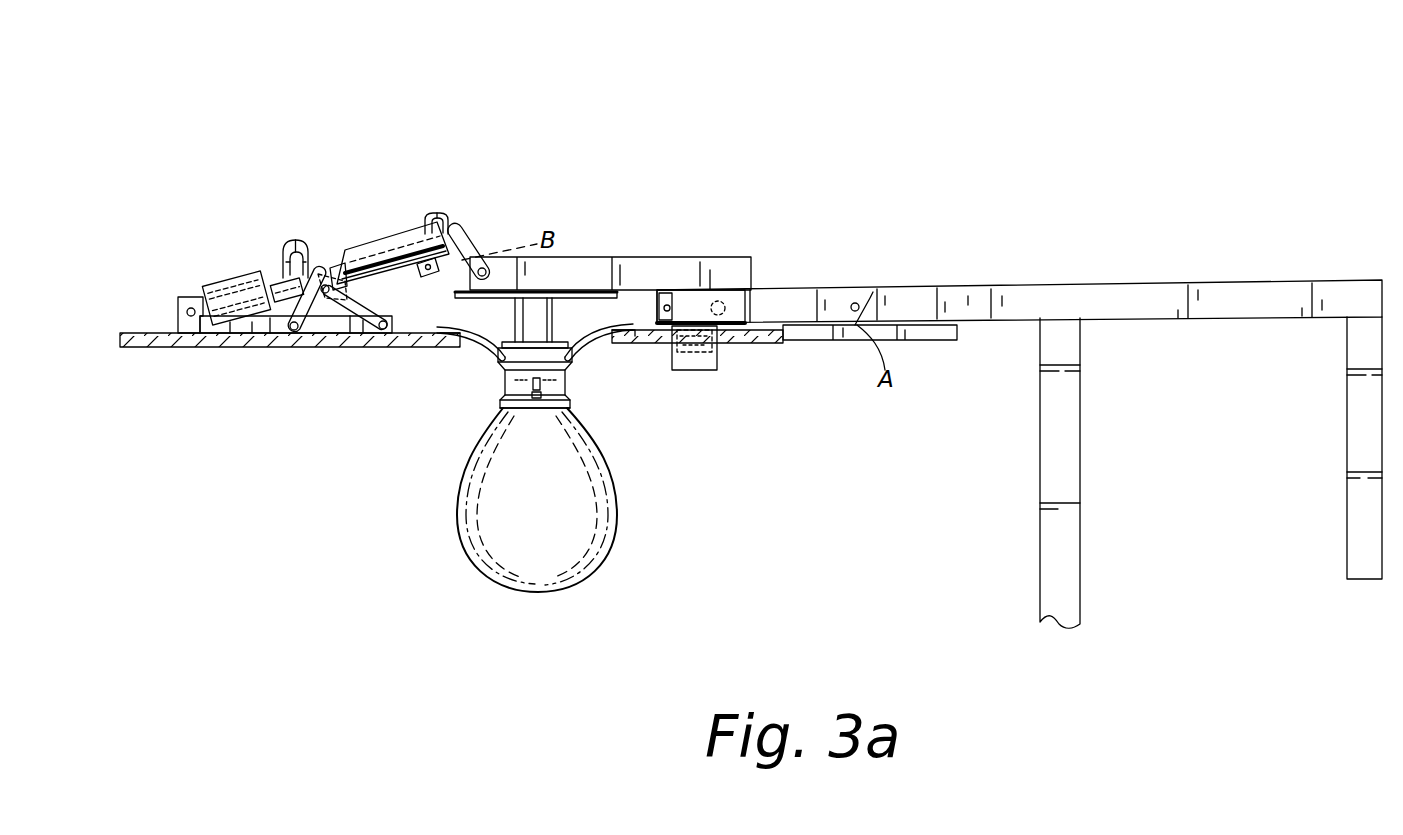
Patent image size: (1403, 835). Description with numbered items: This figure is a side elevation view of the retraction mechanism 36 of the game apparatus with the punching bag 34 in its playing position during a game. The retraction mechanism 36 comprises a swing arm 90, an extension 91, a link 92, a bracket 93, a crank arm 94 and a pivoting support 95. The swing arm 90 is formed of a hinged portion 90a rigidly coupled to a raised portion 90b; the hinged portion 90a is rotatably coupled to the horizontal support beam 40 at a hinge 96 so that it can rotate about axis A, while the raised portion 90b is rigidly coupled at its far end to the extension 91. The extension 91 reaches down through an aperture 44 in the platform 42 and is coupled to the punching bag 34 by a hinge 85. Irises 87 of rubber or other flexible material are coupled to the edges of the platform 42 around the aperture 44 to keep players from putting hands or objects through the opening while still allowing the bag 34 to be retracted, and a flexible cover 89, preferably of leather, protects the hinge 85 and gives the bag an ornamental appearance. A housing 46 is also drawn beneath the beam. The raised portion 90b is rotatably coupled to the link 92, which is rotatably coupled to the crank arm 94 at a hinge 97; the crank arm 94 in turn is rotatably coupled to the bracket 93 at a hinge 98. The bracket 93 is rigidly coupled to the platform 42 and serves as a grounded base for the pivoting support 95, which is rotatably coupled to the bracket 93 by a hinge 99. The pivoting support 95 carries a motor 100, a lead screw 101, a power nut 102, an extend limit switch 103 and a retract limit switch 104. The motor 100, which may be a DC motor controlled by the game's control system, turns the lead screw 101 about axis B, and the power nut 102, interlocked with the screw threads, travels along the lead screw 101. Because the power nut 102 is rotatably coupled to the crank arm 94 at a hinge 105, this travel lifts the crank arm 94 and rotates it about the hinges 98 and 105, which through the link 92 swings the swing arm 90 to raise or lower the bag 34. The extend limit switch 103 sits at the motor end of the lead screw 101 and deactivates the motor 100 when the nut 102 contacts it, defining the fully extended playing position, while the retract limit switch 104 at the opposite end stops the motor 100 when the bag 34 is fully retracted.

The punching bag 34 is at (602, 552).
The retraction mechanism 36 is at (902, 112).
The horizontal support beam 40 is at (1143, 294).
The platform 42 is at (120, 342).
The aperture 44 is at (595, 355).
The sensor housing 46 is at (722, 372).
The hinge 85 is at (548, 381).
The irises 87 is at (485, 352).
The flexible cover 89 is at (500, 410).
The swing arm 90 is at (659, 246).
The hinged portion 90a is at (797, 288).
The raised portion 90b is at (653, 272).
The extension 91 is at (548, 318).
The link 92 is at (464, 224).
The bracket 93 is at (250, 349).
The crank arm 94 is at (340, 347).
The pivoting support 95 is at (440, 347).
The hinge 96 is at (860, 300).
The hinge 97 is at (295, 346).
The hinge 98 is at (385, 346).
The hinge 99 is at (178, 312).
The motor 100 is at (198, 280).
The lead screw 101 is at (441, 212).
The power nut 102 is at (379, 265).
The extend limit switch 103 is at (292, 240).
The retract limit switch 104 is at (449, 216).
The hinge 105 is at (322, 282).